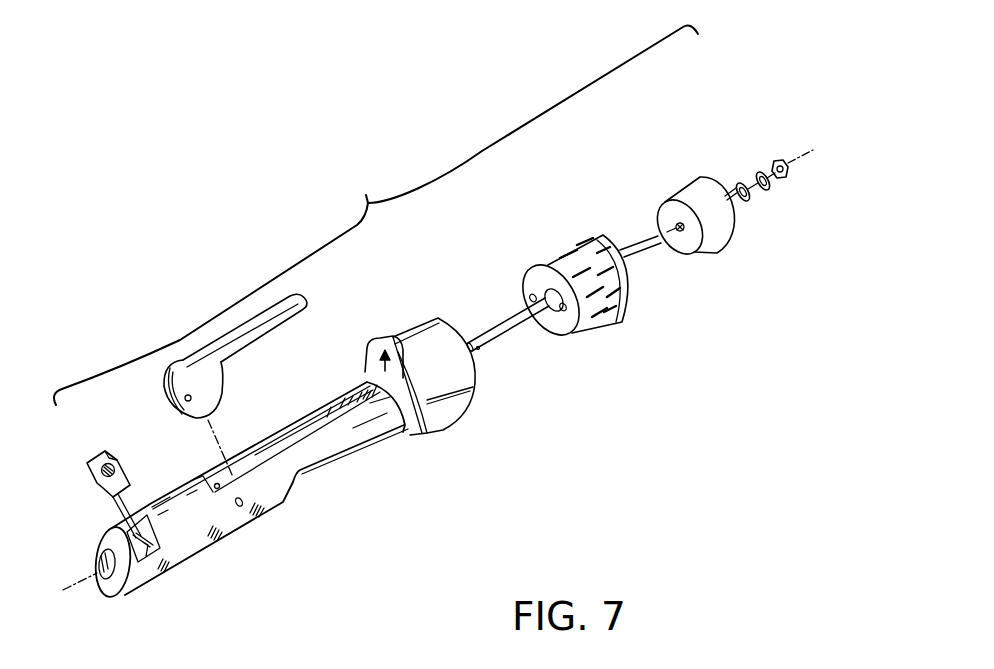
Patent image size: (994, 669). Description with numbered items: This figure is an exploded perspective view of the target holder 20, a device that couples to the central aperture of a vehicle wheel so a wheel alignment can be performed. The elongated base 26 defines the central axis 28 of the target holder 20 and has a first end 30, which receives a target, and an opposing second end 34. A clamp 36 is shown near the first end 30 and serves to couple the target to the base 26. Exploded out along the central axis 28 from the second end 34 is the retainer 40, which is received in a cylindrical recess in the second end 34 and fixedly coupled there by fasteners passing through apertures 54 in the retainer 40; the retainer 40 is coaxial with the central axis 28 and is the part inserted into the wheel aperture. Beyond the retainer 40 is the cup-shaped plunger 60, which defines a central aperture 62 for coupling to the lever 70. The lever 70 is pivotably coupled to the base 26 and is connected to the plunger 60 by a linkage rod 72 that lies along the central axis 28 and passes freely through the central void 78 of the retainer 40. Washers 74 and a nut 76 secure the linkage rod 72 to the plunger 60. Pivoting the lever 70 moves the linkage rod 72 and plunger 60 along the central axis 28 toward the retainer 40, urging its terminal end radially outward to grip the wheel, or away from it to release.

The target holder 20 is at (514, 168).
The base 26 is at (233, 530).
The central axis 28 is at (807, 151).
The first end 30 is at (158, 591).
The second end 34 is at (447, 446).
The clamp 36 is at (113, 454).
The retainer 40 is at (550, 263).
The apertures 54 is at (565, 316).
The plunger 60 is at (720, 239).
The central aperture 62 is at (680, 233).
The lever 70 is at (296, 297).
The linkage rod 72 is at (492, 331).
The washers 74 is at (758, 172).
The nut 76 is at (780, 179).
The central void 78 is at (551, 318).